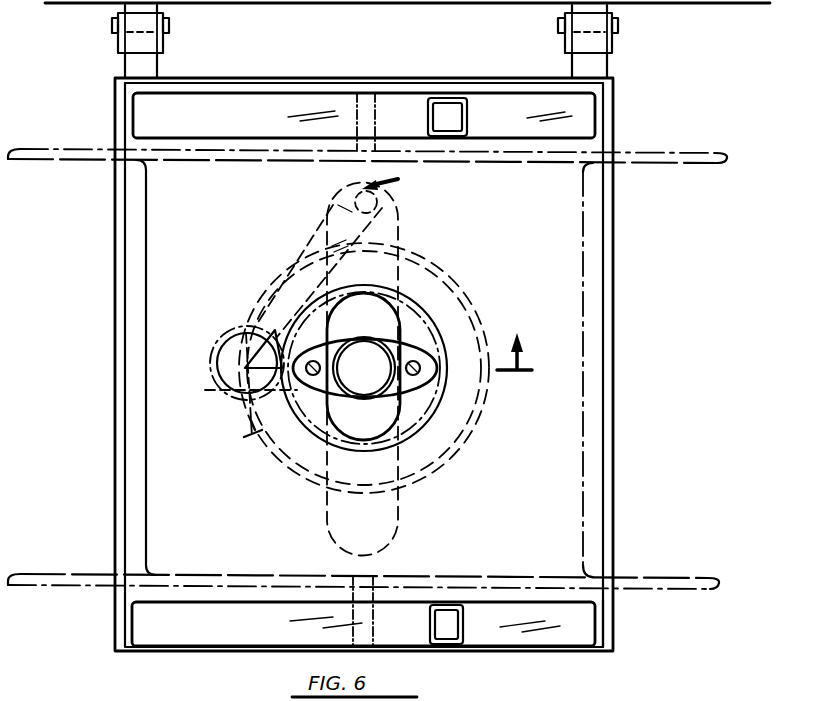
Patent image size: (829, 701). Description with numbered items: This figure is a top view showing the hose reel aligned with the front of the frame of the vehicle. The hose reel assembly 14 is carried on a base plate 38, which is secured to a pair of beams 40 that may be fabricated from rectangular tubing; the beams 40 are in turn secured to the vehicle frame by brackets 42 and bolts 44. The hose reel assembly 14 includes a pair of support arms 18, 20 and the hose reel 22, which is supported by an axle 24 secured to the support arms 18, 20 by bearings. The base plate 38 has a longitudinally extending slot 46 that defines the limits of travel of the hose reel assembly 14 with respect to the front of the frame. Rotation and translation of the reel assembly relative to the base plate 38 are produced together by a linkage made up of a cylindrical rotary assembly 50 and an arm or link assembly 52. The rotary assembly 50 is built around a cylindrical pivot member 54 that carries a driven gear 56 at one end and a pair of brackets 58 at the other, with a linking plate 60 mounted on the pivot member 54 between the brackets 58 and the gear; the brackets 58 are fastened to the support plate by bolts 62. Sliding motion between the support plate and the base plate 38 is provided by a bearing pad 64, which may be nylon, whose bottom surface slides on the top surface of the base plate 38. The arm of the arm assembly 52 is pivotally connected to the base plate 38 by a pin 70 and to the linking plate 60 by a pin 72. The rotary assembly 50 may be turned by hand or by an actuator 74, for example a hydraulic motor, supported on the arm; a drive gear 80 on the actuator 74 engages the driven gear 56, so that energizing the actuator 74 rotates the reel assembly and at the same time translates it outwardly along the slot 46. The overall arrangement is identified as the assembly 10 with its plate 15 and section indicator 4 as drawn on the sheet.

The assembly 10 is at (620, 645).
The hose reel assembly 14 is at (612, 620).
The plate 15 is at (395, 3).
The support arm 18 is at (500, 642).
The support arm 20 is at (490, 100).
The hose reel 22 is at (738, 212).
The axle 24 is at (348, 104).
The base plate 38 is at (615, 104).
The beams 40 is at (613, 72).
The brackets 42 is at (614, 53).
The bolts 44 is at (618, 30).
The slot 46 is at (397, 552).
The cylindrical rotary assembly 50 is at (470, 466).
The arm assembly 52 is at (312, 232).
The cylindrical pivot member 54 is at (364, 386).
The driven gear 56 is at (298, 400).
The brackets 58 is at (430, 388).
The linking plate 60 is at (446, 263).
The bolts 62 is at (507, 393).
The bearing pad 64 is at (457, 290).
The pin 70 is at (353, 195).
The pin 72 is at (236, 388).
The actuator 74 is at (220, 352).
The drive gear 80 is at (250, 434).
The section line 4- 4 is at (456, 271).